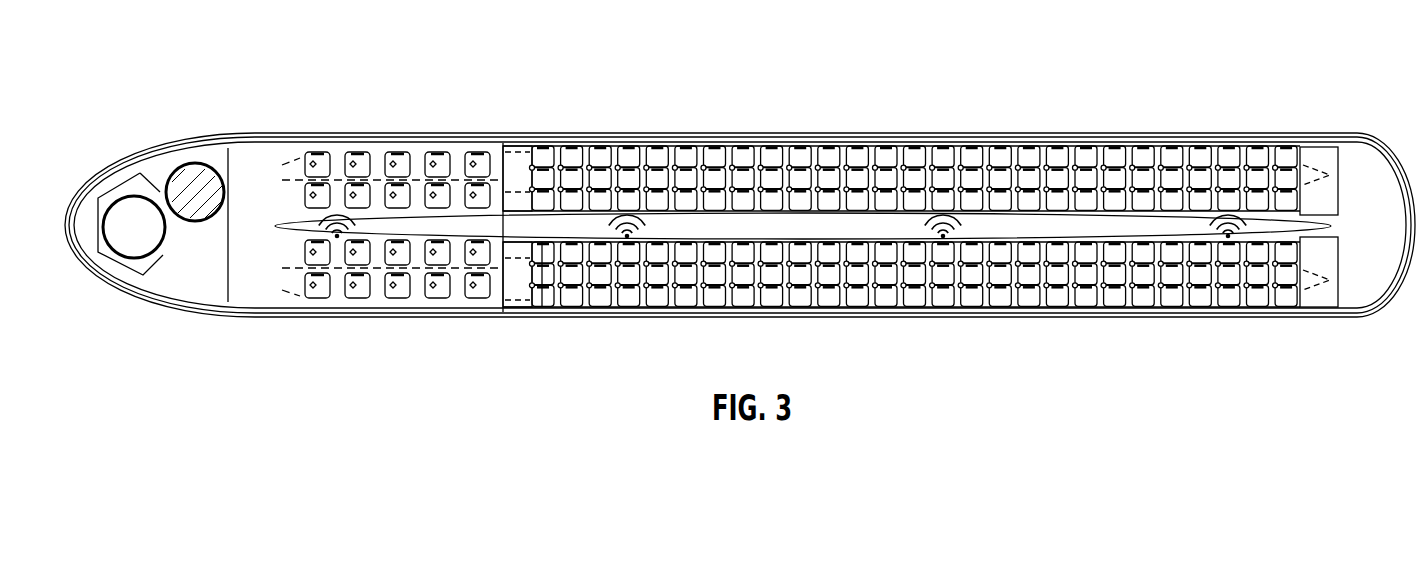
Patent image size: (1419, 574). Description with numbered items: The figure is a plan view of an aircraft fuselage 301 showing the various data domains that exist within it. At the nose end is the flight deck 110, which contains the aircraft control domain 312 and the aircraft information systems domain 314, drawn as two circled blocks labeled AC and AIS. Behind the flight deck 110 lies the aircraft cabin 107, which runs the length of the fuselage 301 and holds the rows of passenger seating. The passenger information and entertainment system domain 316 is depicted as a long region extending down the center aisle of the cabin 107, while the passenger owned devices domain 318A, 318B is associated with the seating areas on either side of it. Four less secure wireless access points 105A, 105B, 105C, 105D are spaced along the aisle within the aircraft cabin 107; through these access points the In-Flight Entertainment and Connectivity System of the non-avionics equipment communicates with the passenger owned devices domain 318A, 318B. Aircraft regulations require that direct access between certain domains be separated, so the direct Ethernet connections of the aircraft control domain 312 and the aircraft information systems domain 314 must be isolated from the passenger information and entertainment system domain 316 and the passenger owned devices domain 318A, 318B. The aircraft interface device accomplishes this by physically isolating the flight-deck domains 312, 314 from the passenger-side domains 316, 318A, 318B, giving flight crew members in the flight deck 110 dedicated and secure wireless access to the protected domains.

The aircraft fuselage 301 is at (797, 133).
The flight deck 110 is at (190, 272).
The aircraft control domain 312 is at (118, 202).
The aircraft information systems domain 314 is at (190, 163).
The passenger owned devices domain 318A is at (460, 163).
The passenger information and entertainment system domain 316 is at (437, 225).
The passenger owned devices domain 318B is at (550, 292).
The aircraft cabin 107 is at (1357, 293).
The wireless access point 105A is at (332, 228).
The wireless access point 105B is at (635, 230).
The wireless access point 105C is at (945, 230).
The wireless access point 105D is at (1232, 228).